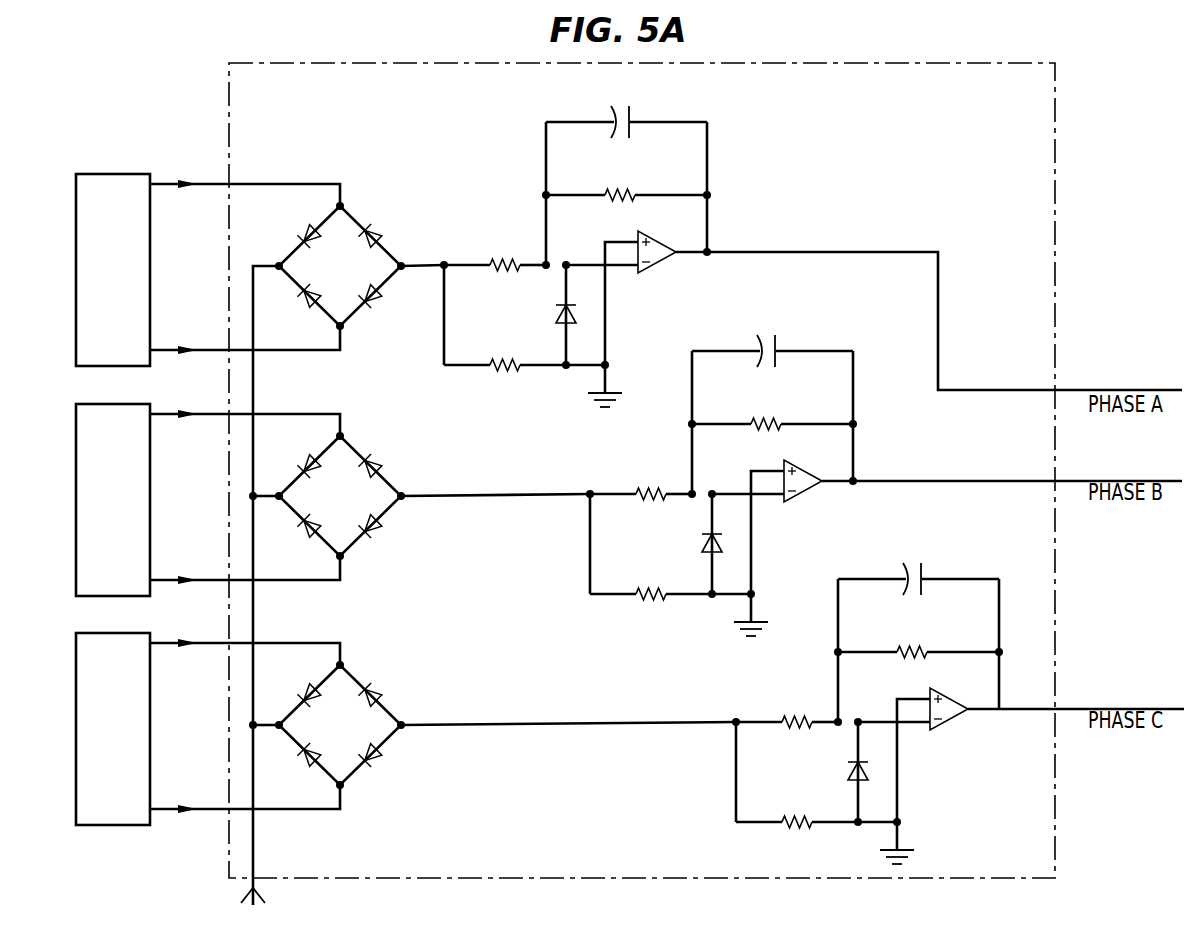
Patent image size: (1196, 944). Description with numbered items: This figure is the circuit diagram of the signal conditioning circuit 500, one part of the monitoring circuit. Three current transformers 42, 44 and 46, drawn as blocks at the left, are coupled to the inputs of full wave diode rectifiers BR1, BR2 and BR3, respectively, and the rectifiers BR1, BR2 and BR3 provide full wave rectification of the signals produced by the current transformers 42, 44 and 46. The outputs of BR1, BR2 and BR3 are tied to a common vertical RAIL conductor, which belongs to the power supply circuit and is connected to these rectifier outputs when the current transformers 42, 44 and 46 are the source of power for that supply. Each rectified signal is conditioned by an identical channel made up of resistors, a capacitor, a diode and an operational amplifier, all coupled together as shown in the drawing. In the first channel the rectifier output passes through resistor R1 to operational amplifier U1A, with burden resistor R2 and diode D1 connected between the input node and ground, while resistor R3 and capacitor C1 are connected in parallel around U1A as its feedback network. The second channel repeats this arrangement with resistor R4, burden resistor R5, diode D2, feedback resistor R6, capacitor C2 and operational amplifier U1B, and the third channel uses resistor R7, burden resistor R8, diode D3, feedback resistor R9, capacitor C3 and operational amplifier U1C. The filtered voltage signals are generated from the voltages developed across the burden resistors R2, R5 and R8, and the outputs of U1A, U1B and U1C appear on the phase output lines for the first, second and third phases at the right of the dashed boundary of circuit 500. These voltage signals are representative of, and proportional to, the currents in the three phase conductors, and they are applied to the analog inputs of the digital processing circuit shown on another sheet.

The current transformer 42 is at (128, 285).
The current transformer 44 is at (208, 500).
The current transformer 46 is at (208, 729).
The signal conditioning circuit 500 is at (1055, 90).
The RAIL conductor RAIL is at (256, 851).
The full wave diode rectifier BR1 is at (350, 266).
The full wave diode rectifier BR2 is at (337, 496).
The full wave diode rectifier BR3 is at (337, 725).
The resistor R1 is at (495, 249).
The burden resistor R2 is at (482, 350).
The resistor R3 is at (626, 180).
The resistor R4 is at (641, 478).
The burden resistor R5 is at (628, 579).
The resistor R6 is at (772, 409).
The resistor R7 is at (787, 706).
The burden resistor R8 is at (774, 807).
The resistor R9 is at (918, 637).
The capacitor C1 is at (626, 107).
The capacitor C2 is at (772, 336).
The capacitor C3 is at (918, 564).
The diode D1 is at (552, 315).
The diode D2 is at (698, 544).
The diode D3 is at (844, 772).
The operational amplifier U1A is at (645, 319).
The operational amplifier U1B is at (791, 548).
The operational amplifier U1C is at (937, 776).